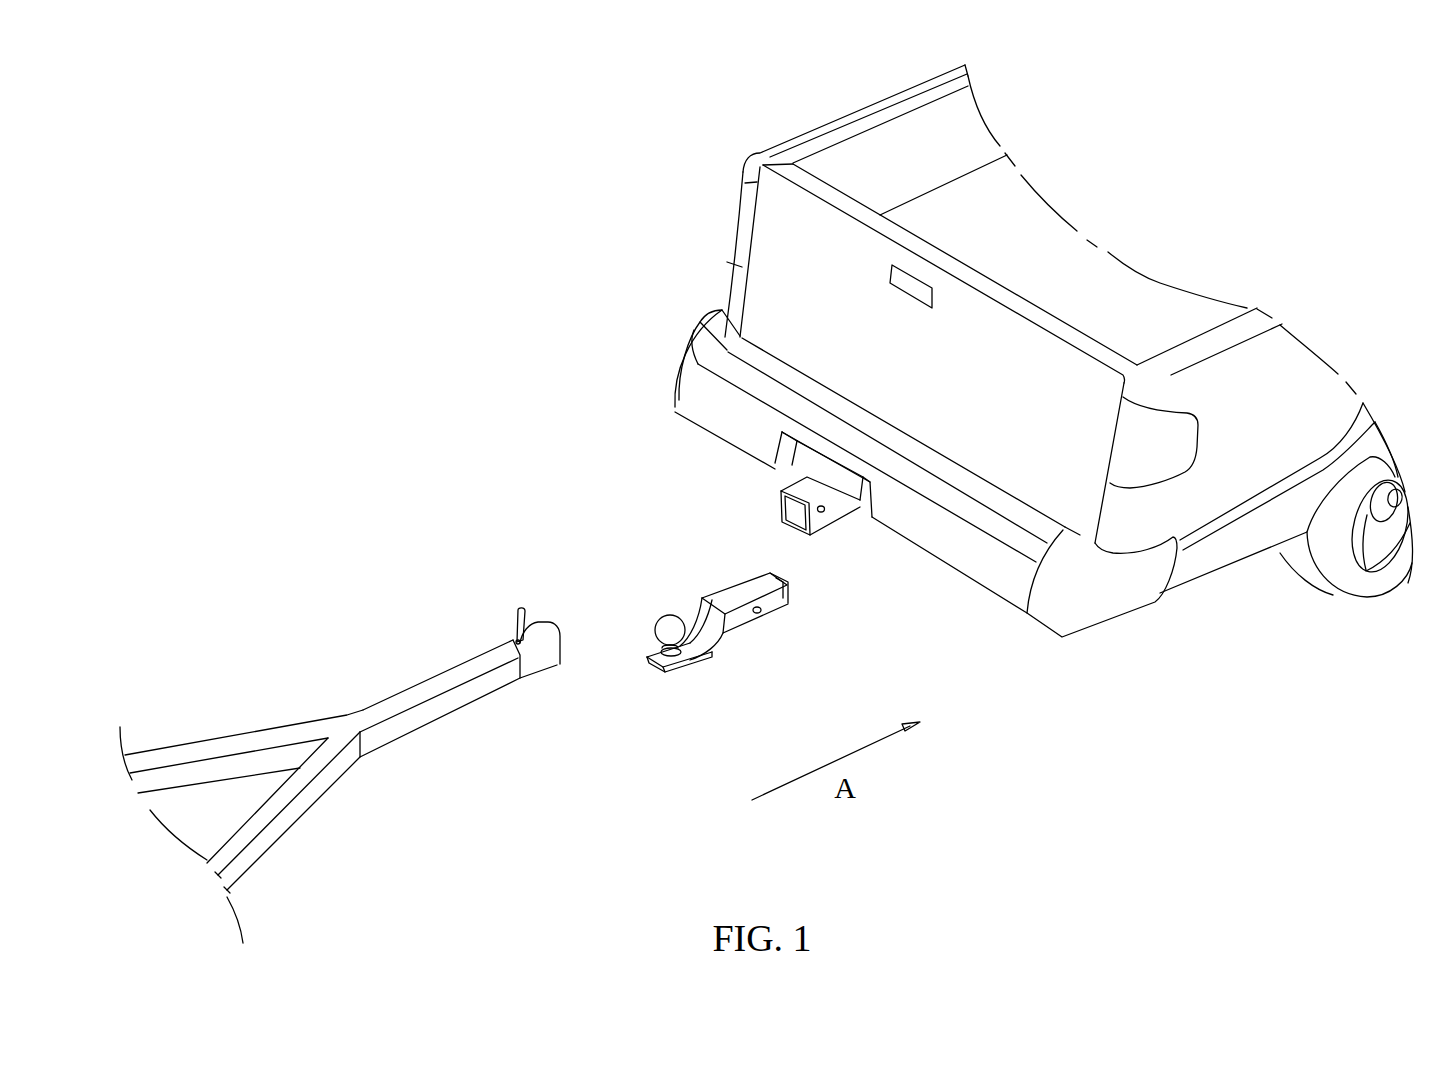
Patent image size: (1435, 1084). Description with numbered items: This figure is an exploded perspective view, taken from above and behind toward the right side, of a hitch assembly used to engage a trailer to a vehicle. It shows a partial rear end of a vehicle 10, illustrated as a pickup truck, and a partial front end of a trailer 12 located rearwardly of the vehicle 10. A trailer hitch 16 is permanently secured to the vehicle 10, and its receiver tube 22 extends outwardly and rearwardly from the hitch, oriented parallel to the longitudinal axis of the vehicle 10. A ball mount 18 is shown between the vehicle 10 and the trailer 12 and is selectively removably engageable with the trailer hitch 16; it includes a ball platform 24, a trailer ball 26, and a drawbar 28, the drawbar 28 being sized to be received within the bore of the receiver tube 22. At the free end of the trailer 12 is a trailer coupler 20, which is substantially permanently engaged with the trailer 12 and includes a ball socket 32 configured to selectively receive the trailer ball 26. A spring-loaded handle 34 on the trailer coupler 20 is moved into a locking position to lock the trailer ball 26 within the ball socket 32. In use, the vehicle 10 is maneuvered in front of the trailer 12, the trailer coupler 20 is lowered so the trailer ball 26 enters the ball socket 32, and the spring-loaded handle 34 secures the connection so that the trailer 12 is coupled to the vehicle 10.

The vehicle 10 is at (708, 128).
The trailer 12 is at (350, 727).
The trailer hitch 16 is at (852, 520).
The ball mount 18 is at (689, 637).
The trailer coupler 20 is at (523, 639).
The receiver tube 22 is at (815, 538).
The ball platform 24 is at (702, 596).
The trailer ball 26 is at (657, 622).
The drawbar 28 is at (789, 605).
The ball socket 32 is at (542, 622).
The spring-loaded handle 34 is at (519, 608).